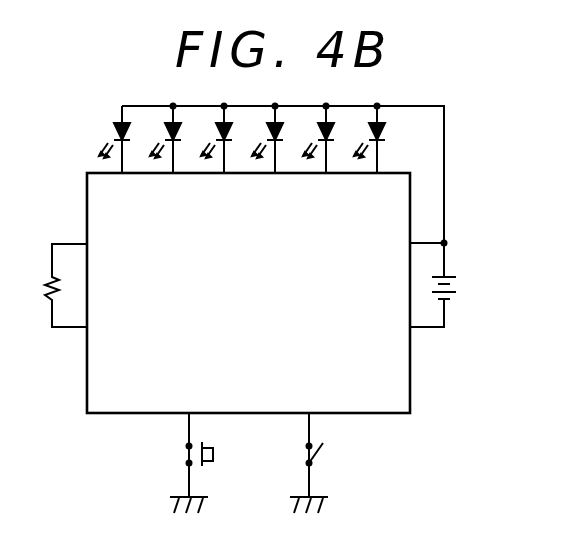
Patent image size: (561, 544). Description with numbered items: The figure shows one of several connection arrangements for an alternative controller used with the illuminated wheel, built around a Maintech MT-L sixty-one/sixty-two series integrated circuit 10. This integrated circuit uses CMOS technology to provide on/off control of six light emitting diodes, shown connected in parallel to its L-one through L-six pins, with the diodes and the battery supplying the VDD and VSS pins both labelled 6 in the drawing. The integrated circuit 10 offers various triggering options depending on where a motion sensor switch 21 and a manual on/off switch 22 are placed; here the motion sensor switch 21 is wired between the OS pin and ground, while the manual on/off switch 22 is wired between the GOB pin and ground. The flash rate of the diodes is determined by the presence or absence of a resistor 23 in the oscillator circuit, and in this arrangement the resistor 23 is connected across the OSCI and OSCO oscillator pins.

The light emitting diodes / battery 6 is at (0, 183).
The integrated circuit 10 is at (245, 366).
The motion sensor switch 21 is at (183, 452).
The manual on/off switch 22 is at (326, 452).
The resistor 23 is at (44, 305).